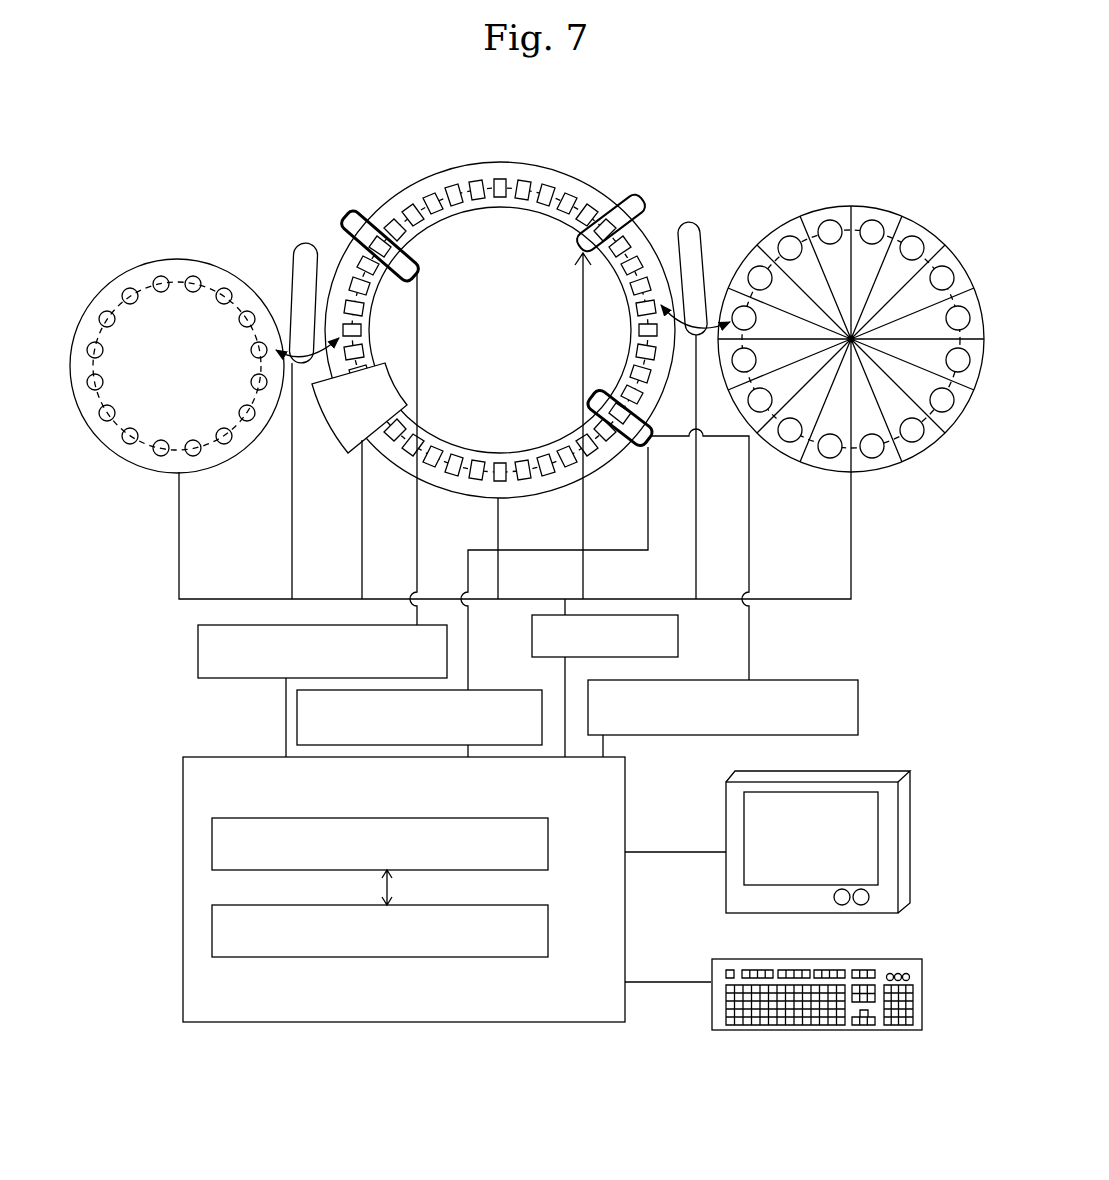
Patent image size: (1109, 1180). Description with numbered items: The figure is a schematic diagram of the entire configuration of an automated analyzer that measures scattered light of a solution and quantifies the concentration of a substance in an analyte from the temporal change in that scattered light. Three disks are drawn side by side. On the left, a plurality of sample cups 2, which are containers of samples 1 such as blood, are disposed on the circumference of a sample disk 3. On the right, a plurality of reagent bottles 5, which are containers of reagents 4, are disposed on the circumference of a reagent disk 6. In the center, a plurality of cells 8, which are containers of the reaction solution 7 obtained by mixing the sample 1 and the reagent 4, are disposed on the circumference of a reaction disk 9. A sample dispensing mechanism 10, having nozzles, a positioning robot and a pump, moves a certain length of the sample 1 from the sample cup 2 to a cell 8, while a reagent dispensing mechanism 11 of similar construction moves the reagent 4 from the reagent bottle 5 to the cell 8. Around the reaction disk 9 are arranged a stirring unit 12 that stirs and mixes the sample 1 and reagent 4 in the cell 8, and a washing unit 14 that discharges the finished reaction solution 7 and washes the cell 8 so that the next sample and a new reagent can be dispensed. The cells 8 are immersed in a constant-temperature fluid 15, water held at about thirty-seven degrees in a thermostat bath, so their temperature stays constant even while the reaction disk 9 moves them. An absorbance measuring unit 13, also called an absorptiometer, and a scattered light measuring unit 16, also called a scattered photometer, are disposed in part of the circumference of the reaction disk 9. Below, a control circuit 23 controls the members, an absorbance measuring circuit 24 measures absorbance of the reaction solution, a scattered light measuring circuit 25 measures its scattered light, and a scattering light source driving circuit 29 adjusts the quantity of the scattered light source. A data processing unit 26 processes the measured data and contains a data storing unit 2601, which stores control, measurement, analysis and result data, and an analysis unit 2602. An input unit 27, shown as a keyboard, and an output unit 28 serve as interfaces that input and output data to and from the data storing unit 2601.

The sample 1 is at (197, 277).
The sample cup 2 is at (161, 276).
The sample disk 3 is at (128, 268).
The reagent 4 is at (873, 220).
The reagent bottle 5 is at (830, 220).
The reagent disk 6 is at (788, 220).
The reaction solution 7 is at (521, 180).
The cell 8 is at (499, 178).
The reaction disk 9 is at (472, 160).
The sample dispensing mechanism 10 is at (298, 244).
The reagent dispensing mechanism 11 is at (700, 232).
The stirring unit 12 is at (643, 200).
The absorbance measuring unit 13 is at (350, 216).
The washing unit 14 is at (340, 450).
The constant-temperature fluid 15 is at (581, 197).
The scattered light measuring unit 16 is at (637, 452).
The control circuit 23 is at (680, 641).
The absorbance measuring circuit 24 is at (198, 643).
The scattered light measuring circuit 25 is at (488, 690).
The data processing unit 26 is at (183, 760).
The input unit 27 is at (826, 960).
The output unit 28 is at (893, 778).
The scattering light source driving circuit 29 is at (860, 713).
The data storing unit 2601 is at (548, 818).
The analysis unit 2602 is at (548, 905).